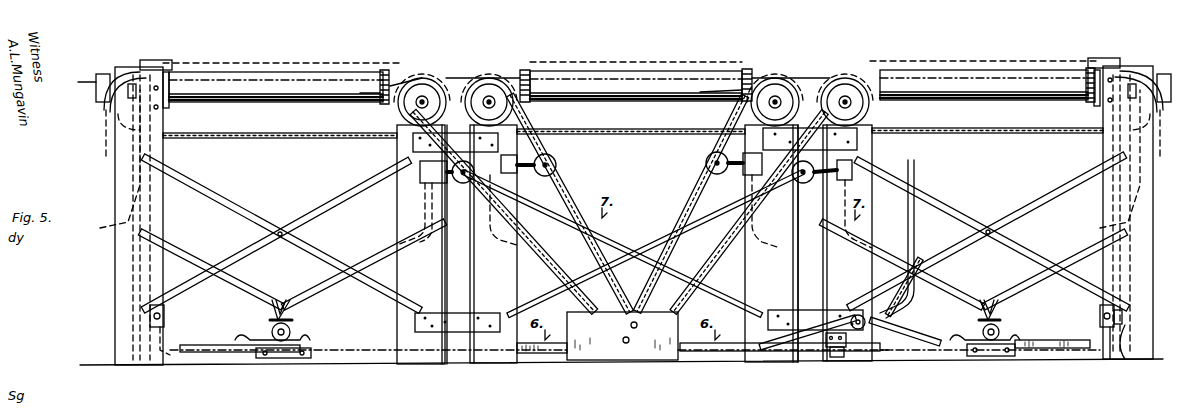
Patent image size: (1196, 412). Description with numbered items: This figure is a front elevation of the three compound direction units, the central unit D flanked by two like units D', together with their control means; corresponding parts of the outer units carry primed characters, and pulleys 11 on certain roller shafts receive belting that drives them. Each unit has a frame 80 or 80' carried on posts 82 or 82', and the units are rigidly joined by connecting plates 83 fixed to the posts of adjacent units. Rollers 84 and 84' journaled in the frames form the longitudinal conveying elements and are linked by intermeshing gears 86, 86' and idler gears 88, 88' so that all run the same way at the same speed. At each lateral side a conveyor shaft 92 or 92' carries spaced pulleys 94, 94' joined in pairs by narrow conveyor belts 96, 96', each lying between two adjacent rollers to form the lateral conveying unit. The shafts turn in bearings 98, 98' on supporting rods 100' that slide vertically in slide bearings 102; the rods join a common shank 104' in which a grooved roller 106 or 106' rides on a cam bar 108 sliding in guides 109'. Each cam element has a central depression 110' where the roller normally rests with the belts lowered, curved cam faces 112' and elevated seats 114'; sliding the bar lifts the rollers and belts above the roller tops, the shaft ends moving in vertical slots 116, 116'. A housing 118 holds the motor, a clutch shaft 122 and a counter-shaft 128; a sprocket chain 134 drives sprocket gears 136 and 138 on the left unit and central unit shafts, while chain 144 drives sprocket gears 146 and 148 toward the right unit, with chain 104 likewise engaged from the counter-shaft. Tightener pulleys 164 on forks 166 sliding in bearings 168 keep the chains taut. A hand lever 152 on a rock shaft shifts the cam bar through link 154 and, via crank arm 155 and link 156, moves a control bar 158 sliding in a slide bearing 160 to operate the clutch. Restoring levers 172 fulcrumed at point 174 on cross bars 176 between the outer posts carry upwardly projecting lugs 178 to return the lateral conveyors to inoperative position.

The fastening pin 11 is at (613, 84).
The frame 80 is at (636, 84).
The frame 80' is at (631, 96).
The post 82 is at (634, 244).
The post 82' is at (470, 216).
The connecting plate 83 is at (815, 310).
The roller 84 is at (636, 111).
The roller 84' is at (628, 110).
The intermeshing gear 86 is at (711, 110).
The intermeshing gear 86' is at (697, 109).
The idler gear 88 is at (721, 107).
The idler gear 88' is at (715, 99).
The conveyor shaft 92 is at (614, 126).
The conveyor shaft 92' is at (627, 130).
The pulley 94 is at (110, 97).
The pulley 94' is at (1154, 129).
The conveyor belt 96 is at (631, 98).
The conveyor belt 96' is at (633, 98).
The bearing 98 is at (100, 142).
The bearing 98' is at (1165, 135).
The supporting rod 100' is at (633, 232).
The slide bearing 102 is at (617, 169).
The sprocket chain 104 is at (736, 212).
The shank 104' is at (635, 312).
The grooved roller 106 is at (504, 211).
The grooved roller 106' is at (657, 312).
The cam bar 108 is at (540, 353).
The guide 109' is at (629, 365).
The central depression 110' is at (243, 365).
The cam face 112' is at (635, 324).
The elevated seat 114' is at (627, 325).
The vertical slot 116 is at (80, 98).
The vertical slot 116' is at (1154, 81).
The housing 118 is at (610, 355).
The clutch shaft 122 is at (630, 345).
The counter-shaft 128 is at (638, 326).
The sprocket chain 134 is at (572, 183).
The sprocket gear 136 is at (425, 85).
The sprocket gear 138 is at (492, 85).
The sprocket chain 144 is at (686, 197).
The sprocket gear 146 is at (852, 85).
The sprocket gear 148 is at (775, 85).
The hand lever 152 is at (914, 224).
The link 154 is at (880, 320).
The crank arm 155 is at (860, 332).
The link 156 is at (830, 348).
The control bar 158 is at (762, 352).
The slide bearing 160 is at (837, 358).
The tightener pulley 164 is at (462, 183).
The fork 166 is at (591, 164).
The bearing 168 is at (890, 155).
The lever 172 is at (166, 330).
The fulcrum point 174 is at (1122, 316).
The cross bar 176 is at (165, 308).
The lug 178 is at (160, 54).
The compound direction unit D is at (636, 69).
The compound direction unit D' is at (631, 71).